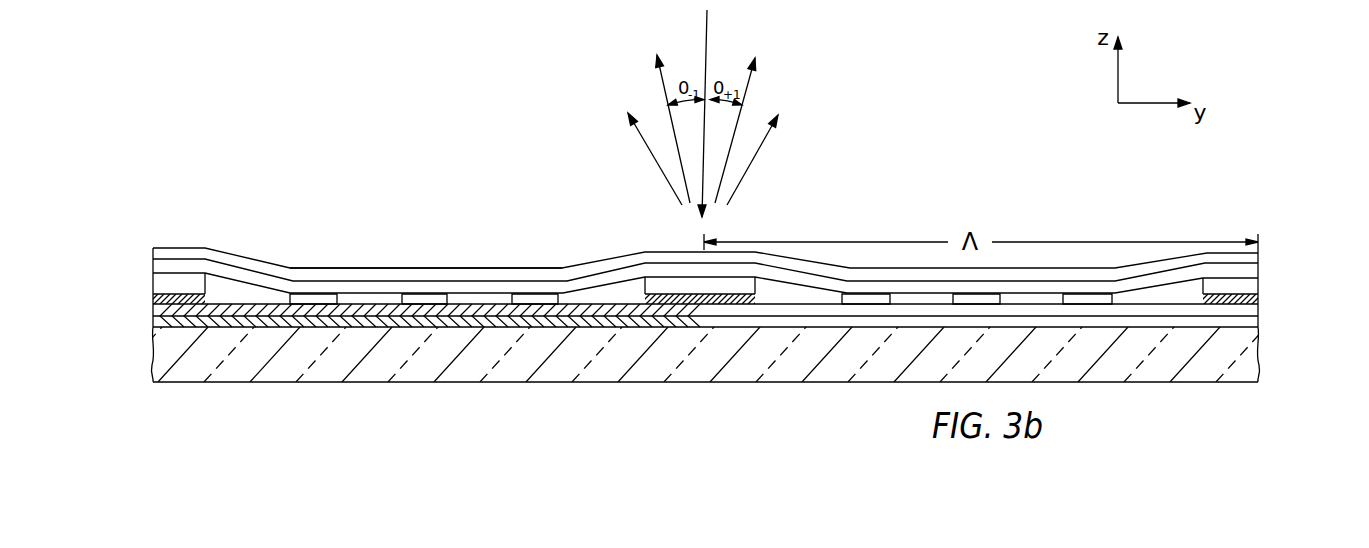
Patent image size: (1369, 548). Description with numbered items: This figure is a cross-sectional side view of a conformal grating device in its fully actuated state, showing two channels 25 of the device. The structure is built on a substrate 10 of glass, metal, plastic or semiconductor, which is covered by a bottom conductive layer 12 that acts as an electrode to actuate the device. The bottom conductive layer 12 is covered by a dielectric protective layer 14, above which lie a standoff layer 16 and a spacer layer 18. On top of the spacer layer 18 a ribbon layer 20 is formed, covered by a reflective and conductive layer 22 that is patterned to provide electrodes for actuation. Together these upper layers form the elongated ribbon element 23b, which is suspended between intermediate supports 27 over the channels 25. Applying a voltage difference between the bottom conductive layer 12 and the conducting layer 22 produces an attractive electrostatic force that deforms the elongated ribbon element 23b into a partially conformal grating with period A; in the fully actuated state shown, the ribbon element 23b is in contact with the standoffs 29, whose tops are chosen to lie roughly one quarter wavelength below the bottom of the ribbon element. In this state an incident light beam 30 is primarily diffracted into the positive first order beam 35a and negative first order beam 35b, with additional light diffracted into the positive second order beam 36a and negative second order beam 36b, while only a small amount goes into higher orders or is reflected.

The substrate 10 is at (165, 352).
The bottom conductive layer 12 is at (152, 316).
The protective layer 14 is at (152, 307).
The standoff layer 16 is at (152, 298).
The spacer layer 18 is at (153, 280).
The ribbon layer 20 is at (153, 266).
The reflective and conductive layer 22 is at (153, 256).
The elongated ribbon element 23b is at (368, 268).
The channel 25 is at (615, 305).
The intermediate supports 27 is at (657, 285).
The standoffs 29 is at (315, 304).
The light beam 30 is at (704, 58).
The +1st order beam 35a is at (743, 98).
The -1st order beam 35b is at (670, 115).
The +2nd order beam 36a is at (755, 162).
The -2nd order beam 36b is at (661, 175).